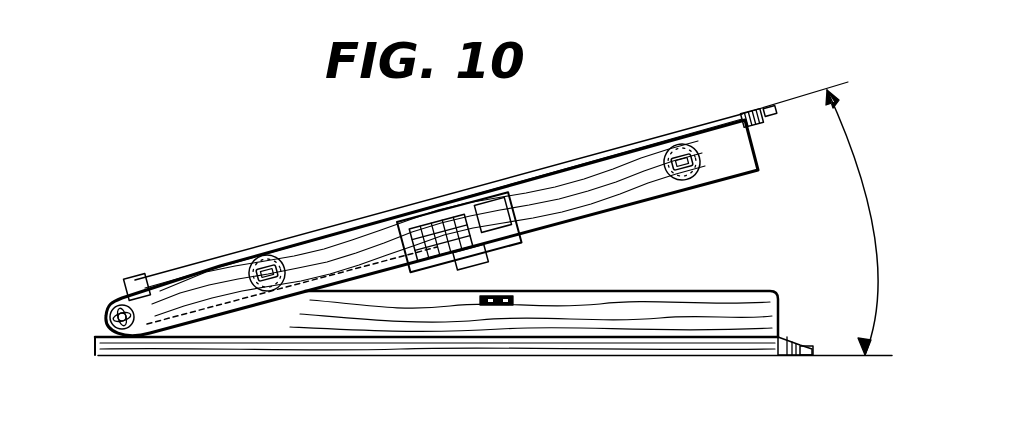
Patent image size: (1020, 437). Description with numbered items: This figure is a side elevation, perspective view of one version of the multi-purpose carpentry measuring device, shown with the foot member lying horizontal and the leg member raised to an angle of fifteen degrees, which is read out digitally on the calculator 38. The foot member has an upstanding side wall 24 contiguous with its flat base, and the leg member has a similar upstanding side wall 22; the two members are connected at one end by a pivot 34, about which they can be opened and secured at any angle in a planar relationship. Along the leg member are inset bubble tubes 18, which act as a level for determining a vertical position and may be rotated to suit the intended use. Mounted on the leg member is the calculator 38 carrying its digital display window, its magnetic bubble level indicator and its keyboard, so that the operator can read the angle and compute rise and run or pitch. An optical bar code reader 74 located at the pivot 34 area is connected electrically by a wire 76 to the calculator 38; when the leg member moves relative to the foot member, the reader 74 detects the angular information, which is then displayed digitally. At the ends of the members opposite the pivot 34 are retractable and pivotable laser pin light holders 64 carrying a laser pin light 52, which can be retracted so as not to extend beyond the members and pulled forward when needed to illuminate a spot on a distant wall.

The bubble tubes 18 is at (692, 182).
The upstanding side wall 22 is at (648, 198).
The upstanding side wall 24 is at (770, 300).
The pivot 34 is at (108, 314).
The calculator 38 is at (500, 237).
The laser pin light 52 is at (773, 114).
The laser pin light holder 64 is at (755, 114).
The optical bar code reader 74 is at (132, 330).
The wire 76 is at (175, 280).